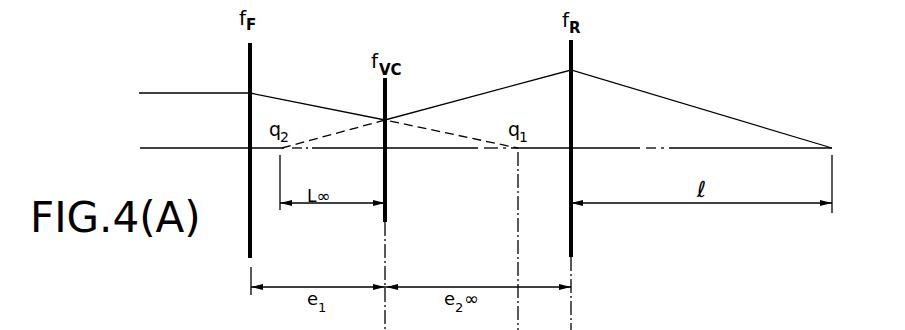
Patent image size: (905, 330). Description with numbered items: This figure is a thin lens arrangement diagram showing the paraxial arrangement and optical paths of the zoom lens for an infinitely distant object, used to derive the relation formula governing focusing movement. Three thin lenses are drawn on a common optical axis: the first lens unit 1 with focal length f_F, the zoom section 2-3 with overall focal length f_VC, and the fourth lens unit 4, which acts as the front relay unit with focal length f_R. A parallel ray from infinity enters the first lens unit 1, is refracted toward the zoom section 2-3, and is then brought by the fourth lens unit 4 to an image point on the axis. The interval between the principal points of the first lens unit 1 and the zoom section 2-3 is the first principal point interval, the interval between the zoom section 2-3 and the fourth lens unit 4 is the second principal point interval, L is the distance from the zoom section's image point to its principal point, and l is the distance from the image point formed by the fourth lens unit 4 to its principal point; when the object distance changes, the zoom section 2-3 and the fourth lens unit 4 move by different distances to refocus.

The first lens unit 1 is at (250, 64).
The zoom section 2-3 is at (385, 96).
The fourth lens unit 4 is at (571, 53).